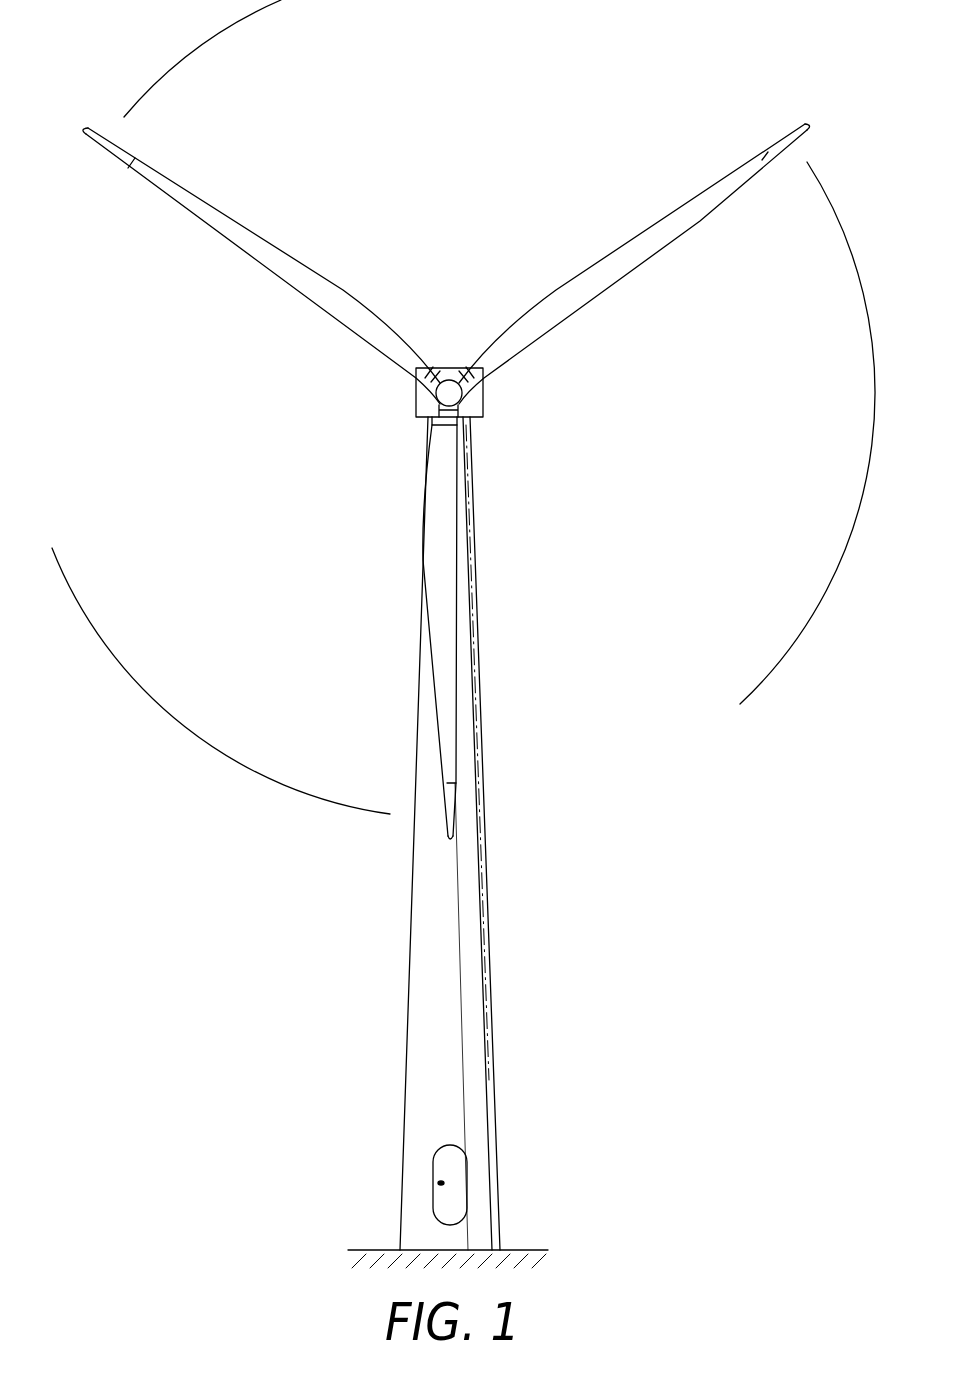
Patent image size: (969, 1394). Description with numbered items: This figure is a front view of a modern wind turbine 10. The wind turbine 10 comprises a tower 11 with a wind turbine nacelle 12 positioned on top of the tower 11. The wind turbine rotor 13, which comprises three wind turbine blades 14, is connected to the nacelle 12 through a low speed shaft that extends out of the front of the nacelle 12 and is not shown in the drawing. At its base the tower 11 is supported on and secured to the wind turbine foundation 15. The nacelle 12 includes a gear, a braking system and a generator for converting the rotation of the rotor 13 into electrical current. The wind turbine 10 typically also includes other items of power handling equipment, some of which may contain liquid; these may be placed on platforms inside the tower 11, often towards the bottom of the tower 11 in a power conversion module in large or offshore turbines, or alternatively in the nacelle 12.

The wind turbine 10 is at (526, 1010).
The tower 11 is at (425, 927).
The wind turbine nacelle 12 is at (484, 408).
The wind turbine rotor 13 is at (441, 394).
The wind turbine blades 14 is at (440, 636).
The wind turbine foundation 15 is at (364, 1250).